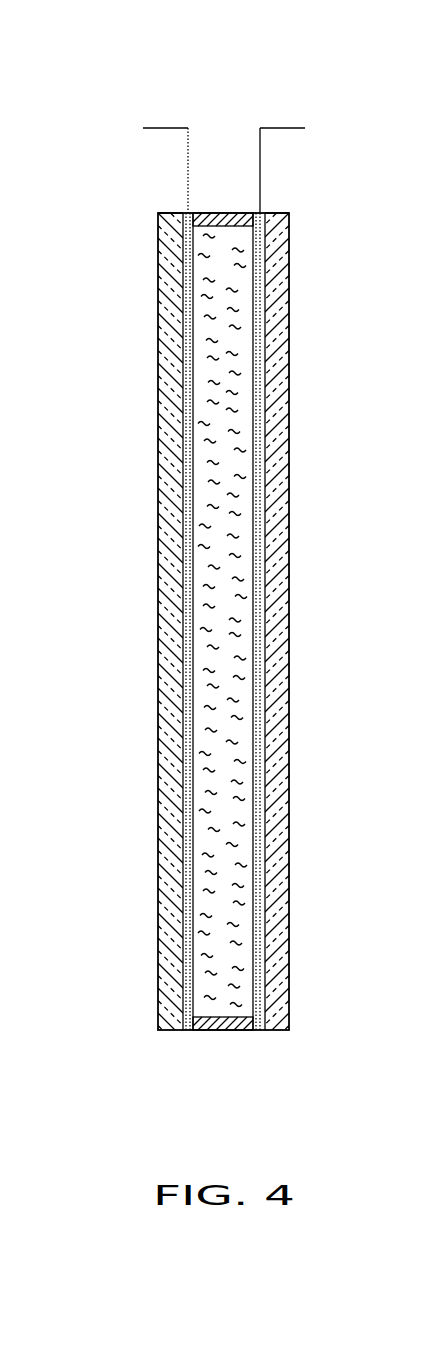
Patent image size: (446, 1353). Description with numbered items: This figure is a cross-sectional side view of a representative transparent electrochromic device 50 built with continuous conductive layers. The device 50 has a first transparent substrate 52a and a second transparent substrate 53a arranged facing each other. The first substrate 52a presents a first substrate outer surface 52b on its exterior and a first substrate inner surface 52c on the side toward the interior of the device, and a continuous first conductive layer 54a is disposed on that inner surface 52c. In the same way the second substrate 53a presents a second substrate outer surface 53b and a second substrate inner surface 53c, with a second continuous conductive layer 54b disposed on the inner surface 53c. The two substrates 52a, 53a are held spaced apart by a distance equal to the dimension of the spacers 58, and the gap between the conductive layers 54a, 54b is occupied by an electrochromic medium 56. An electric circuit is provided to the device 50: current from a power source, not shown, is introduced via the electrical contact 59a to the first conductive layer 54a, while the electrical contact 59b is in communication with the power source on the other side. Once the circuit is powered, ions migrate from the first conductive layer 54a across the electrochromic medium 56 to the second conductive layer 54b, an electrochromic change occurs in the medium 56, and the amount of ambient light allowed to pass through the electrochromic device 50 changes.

The transparent electrochromic device 50 is at (139, 423).
The first transparent substrate 52a is at (282, 486).
The first substrate outer surface 52b is at (290, 235).
The first substrate inner surface 52c is at (263, 278).
The second transparent substrate 53a is at (167, 575).
The second substrate outer surface 53b is at (159, 222).
The second substrate inner surface 53c is at (183, 484).
The first conductive layer 54a is at (257, 365).
The second conductive layer 54b is at (188, 312).
The electrochromic medium 56 is at (230, 823).
The spacers 58 is at (220, 213).
The electrical contact 59a is at (285, 128).
The electrical contact 59b is at (160, 128).